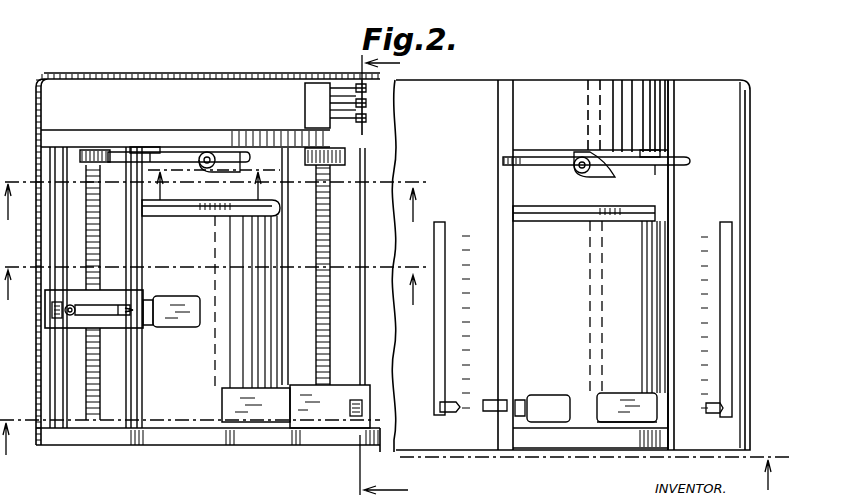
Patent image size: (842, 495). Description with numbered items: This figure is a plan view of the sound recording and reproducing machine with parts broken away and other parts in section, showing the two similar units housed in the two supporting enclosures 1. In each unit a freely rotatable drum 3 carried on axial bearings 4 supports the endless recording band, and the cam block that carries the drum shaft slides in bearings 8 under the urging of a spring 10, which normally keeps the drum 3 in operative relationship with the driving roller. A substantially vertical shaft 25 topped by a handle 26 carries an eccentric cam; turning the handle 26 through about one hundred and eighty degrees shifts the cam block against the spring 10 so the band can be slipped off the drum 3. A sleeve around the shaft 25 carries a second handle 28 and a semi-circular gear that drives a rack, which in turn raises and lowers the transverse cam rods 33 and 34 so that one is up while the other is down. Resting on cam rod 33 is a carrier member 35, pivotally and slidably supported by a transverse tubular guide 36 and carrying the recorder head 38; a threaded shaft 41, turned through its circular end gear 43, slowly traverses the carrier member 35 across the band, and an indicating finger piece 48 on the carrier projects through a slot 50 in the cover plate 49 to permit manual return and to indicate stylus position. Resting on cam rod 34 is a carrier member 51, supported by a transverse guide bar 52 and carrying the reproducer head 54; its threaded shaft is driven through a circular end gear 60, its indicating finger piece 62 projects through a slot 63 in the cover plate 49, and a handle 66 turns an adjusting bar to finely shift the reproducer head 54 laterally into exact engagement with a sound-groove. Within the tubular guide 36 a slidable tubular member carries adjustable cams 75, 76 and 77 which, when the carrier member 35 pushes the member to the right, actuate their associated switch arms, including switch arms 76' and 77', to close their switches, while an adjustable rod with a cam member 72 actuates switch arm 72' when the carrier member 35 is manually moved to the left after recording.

The supporting enclosure 1 is at (395, 444).
The drum 3 is at (282, 203).
The axial bearings 4 is at (217, 192).
The bearings 8 is at (375, 271).
The spring 10 is at (214, 185).
The vertical shaft 25 is at (222, 152).
The handle 26 is at (118, 150).
The handle 28 is at (152, 150).
The cam rod 33 is at (285, 352).
The cam rod 34 is at (127, 368).
The carrier member 35 is at (342, 398).
The tubular guide 36 is at (366, 314).
The recorder head 38 is at (257, 412).
The threaded shaft 41 is at (330, 238).
The circular end gear 43 is at (328, 172).
The indicating finger piece 48 is at (362, 404).
The cover plate 49 is at (738, 180).
The slot 50 is at (726, 252).
The carrier member 51 is at (75, 330).
The guide bar 52 is at (52, 378).
The reproducer head 54 is at (170, 300).
The circular end gear 60 is at (92, 150).
The indicating finger piece 62 is at (45, 326).
The slot 63 is at (436, 368).
The handle 66 is at (145, 328).
The cam member 72 is at (383, 92).
The switch arm 72' is at (321, 88).
The adjustable cam 75 is at (366, 122).
The adjustable cam 76 is at (405, 119).
The switch arm 76' is at (296, 109).
The adjustable cam 77 is at (406, 97).
The switch arm 77' is at (309, 89).